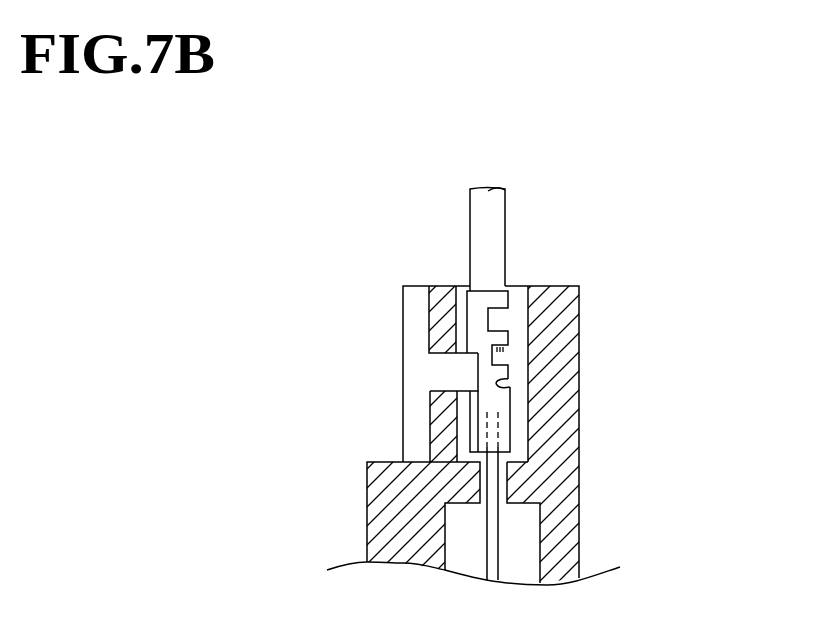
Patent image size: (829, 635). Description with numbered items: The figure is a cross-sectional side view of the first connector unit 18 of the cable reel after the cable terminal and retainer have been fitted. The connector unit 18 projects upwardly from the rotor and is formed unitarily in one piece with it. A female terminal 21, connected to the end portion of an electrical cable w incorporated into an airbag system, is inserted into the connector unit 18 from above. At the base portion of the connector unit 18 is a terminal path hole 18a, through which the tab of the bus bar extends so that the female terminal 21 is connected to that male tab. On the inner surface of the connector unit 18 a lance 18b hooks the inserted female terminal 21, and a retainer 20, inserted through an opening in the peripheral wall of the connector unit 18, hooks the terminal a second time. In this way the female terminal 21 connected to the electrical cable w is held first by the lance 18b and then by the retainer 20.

The electrical cable W is at (493, 230).
The first connector unit 18 is at (580, 330).
The terminal path hole 18a is at (505, 484).
The lance 18b is at (511, 380).
The retainer 20 is at (418, 380).
The female terminal 21 is at (472, 313).